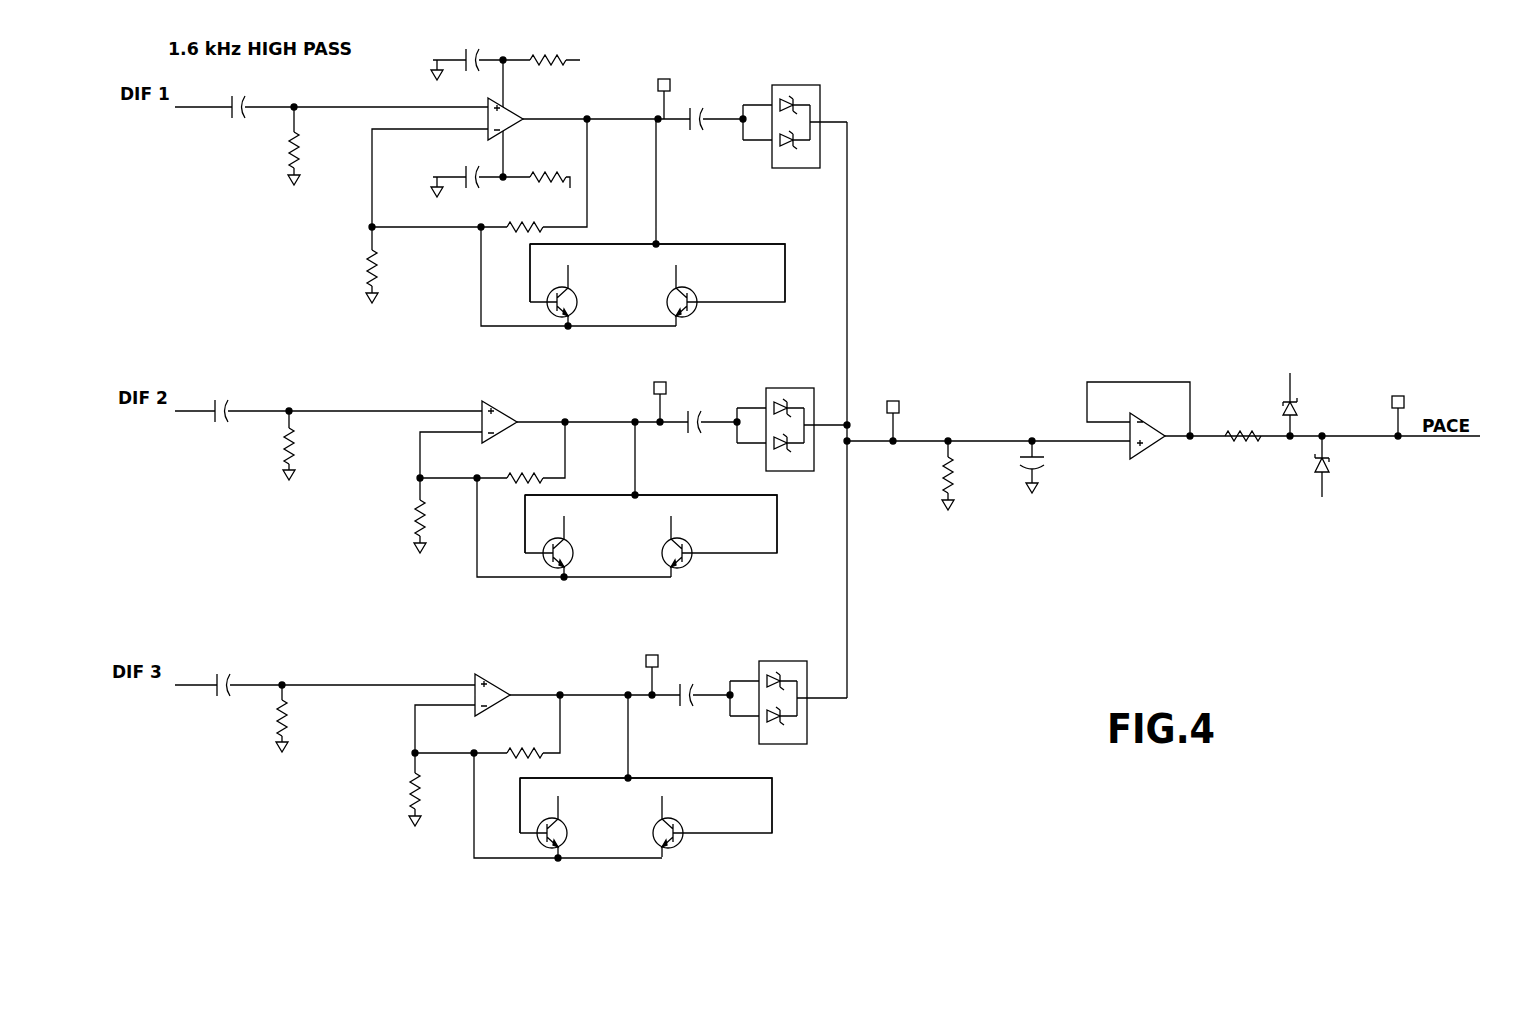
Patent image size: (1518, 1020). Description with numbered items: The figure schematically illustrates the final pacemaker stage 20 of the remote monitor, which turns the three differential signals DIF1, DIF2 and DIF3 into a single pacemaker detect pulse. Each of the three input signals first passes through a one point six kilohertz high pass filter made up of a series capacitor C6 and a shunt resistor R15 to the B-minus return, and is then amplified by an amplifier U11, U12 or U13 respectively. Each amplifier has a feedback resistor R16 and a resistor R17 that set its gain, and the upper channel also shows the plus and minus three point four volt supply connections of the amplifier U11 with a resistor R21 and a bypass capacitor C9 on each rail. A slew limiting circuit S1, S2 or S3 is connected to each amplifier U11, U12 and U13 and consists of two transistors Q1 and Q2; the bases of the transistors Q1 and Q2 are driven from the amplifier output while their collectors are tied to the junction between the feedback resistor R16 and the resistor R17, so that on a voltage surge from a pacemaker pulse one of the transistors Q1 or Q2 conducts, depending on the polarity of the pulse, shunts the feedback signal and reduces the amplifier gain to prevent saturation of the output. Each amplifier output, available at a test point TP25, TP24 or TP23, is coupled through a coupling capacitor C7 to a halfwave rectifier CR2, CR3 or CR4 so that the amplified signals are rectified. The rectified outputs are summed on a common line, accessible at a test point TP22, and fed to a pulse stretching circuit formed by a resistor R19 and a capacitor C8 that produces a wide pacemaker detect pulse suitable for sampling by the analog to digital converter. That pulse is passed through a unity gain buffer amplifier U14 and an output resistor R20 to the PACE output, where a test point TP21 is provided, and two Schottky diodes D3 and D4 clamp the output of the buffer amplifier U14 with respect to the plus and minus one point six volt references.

The final pacemaker stage 20 is at (1120, 201).
The capacitor C6 is at (229, 406).
The resistor R15 is at (305, 447).
The amplifier U11 is at (517, 104).
The capacitor C9 is at (456, 121).
The resistor R21 is at (568, 123).
The feedback resistor R16 is at (518, 490).
The resistor R17 is at (412, 542).
The test point TP25 is at (664, 87).
The test point TP24 is at (657, 390).
The test point TP23 is at (652, 663).
The coupling capacitor C7 is at (695, 396).
The halfwave rectifier CR2 is at (812, 101).
The halfwave rectifier CR3 is at (823, 377).
The halfwave rectifier CR4 is at (815, 645).
The transistor Q1 is at (578, 552).
The transistor Q2 is at (692, 552).
The slew limiting circuit S1 is at (770, 256).
The slew limiting circuit S2 is at (772, 520).
The slew limiting circuit S3 is at (766, 792).
The amplifier U12 is at (521, 395).
The amplifier U13 is at (514, 668).
The test point TP22 is at (896, 408).
The resistor R19 is at (930, 492).
The capacitor C8 is at (1044, 484).
The unity gain buffer amplifier U14 is at (1150, 458).
The output resistor R20 is at (1238, 424).
The Schottky diode D3 is at (1290, 392).
The Schottky diode D4 is at (1323, 480).
The test point TP21 is at (1402, 403).